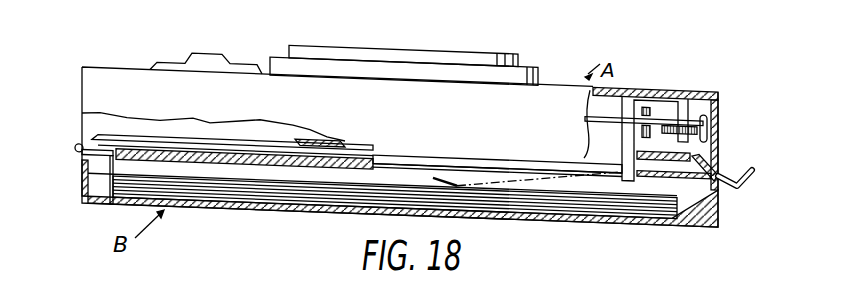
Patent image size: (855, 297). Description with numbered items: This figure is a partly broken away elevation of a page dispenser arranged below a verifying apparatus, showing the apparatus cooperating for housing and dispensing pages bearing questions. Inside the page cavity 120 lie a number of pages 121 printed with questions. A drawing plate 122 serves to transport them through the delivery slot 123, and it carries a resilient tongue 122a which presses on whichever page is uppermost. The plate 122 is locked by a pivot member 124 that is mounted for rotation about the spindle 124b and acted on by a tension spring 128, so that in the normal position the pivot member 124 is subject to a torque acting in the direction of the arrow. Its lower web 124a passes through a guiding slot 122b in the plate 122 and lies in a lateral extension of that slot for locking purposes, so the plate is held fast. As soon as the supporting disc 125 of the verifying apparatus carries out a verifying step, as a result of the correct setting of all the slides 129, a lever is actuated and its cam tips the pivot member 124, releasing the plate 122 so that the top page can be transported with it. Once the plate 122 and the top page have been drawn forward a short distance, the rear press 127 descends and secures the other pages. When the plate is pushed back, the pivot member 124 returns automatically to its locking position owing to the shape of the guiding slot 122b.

The page cavity 120 is at (598, 188).
The pages 121 is at (478, 192).
The drawing plate 122 is at (364, 154).
The resilient tongue 122a is at (523, 178).
The guiding slot 122b is at (440, 156).
The delivery slot 123 is at (727, 199).
The pivot member 124 is at (633, 100).
The lower web 124a is at (633, 178).
The spindle 124b is at (688, 90).
The supporting disc 125 is at (585, 118).
The rear press 127 is at (111, 204).
The tension spring 128 is at (712, 131).
The slides 129 is at (187, 63).